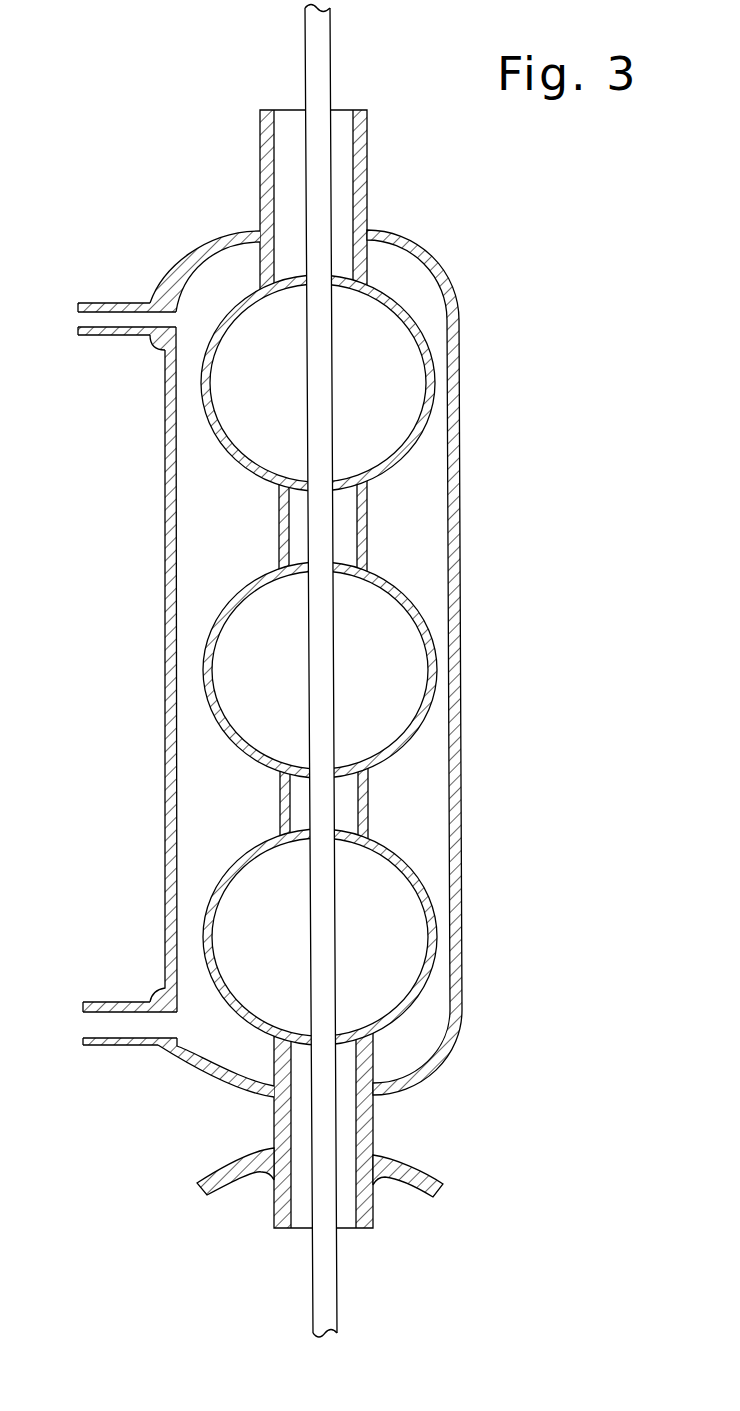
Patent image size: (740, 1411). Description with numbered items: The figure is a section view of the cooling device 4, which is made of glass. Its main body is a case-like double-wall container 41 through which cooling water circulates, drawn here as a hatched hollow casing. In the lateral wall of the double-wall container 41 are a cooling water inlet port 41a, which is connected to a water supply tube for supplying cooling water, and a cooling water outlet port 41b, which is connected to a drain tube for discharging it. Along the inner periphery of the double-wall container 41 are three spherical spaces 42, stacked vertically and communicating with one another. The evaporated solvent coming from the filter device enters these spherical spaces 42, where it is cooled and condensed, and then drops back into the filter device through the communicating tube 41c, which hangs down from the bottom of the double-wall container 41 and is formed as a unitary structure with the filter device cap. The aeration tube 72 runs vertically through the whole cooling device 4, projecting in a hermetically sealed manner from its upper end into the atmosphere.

The cooling device 4 is at (467, 535).
The double-wall container 41 is at (263, 736).
The cooling water inlet port 41a is at (118, 1022).
The cooling water outlet port 41b is at (97, 318).
The communicating tube 41c is at (375, 1210).
The spherical spaces 42 is at (390, 395).
The aeration tube 72 is at (317, 65).